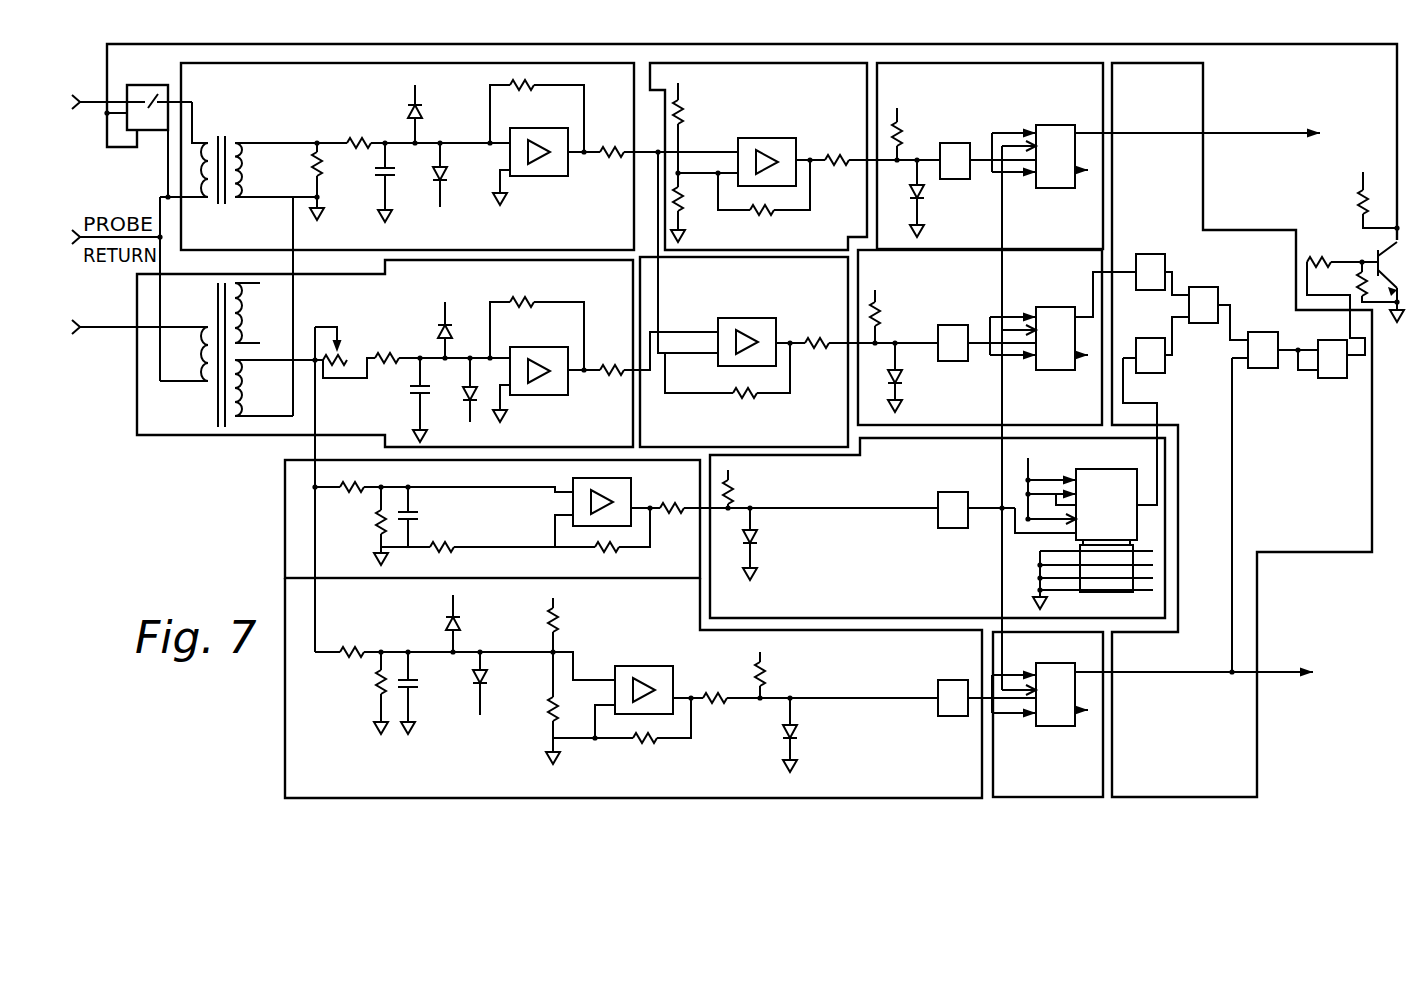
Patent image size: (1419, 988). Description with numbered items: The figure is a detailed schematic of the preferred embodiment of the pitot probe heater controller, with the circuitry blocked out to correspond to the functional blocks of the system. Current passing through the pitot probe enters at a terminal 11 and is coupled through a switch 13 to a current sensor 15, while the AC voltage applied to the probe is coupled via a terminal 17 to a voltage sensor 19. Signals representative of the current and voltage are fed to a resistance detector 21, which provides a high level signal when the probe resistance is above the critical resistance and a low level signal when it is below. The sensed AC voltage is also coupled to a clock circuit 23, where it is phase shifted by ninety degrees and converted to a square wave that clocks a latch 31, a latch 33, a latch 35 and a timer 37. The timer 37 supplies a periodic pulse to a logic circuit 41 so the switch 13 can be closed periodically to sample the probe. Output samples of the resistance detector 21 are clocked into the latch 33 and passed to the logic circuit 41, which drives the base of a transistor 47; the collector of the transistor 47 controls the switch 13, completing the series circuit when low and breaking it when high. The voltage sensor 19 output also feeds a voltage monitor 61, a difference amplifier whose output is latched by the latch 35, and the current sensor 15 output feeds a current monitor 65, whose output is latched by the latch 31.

The terminal 11 is at (82, 101).
The switch 13 is at (150, 85).
The current sensor 15 is at (390, 63).
The terminal 17 is at (82, 330).
The voltage sensor 19 is at (205, 437).
The resistance detector 21 is at (843, 436).
The clock circuit 23 is at (285, 502).
The latch 31 is at (990, 63).
The latch 33 is at (1096, 411).
The latch 35 is at (1025, 797).
The timer 37 is at (948, 469).
The logic circuit 41 is at (1203, 93).
The transistor 47 is at (1378, 250).
The voltage monitor 61 is at (285, 678).
The current monitor 65 is at (760, 63).